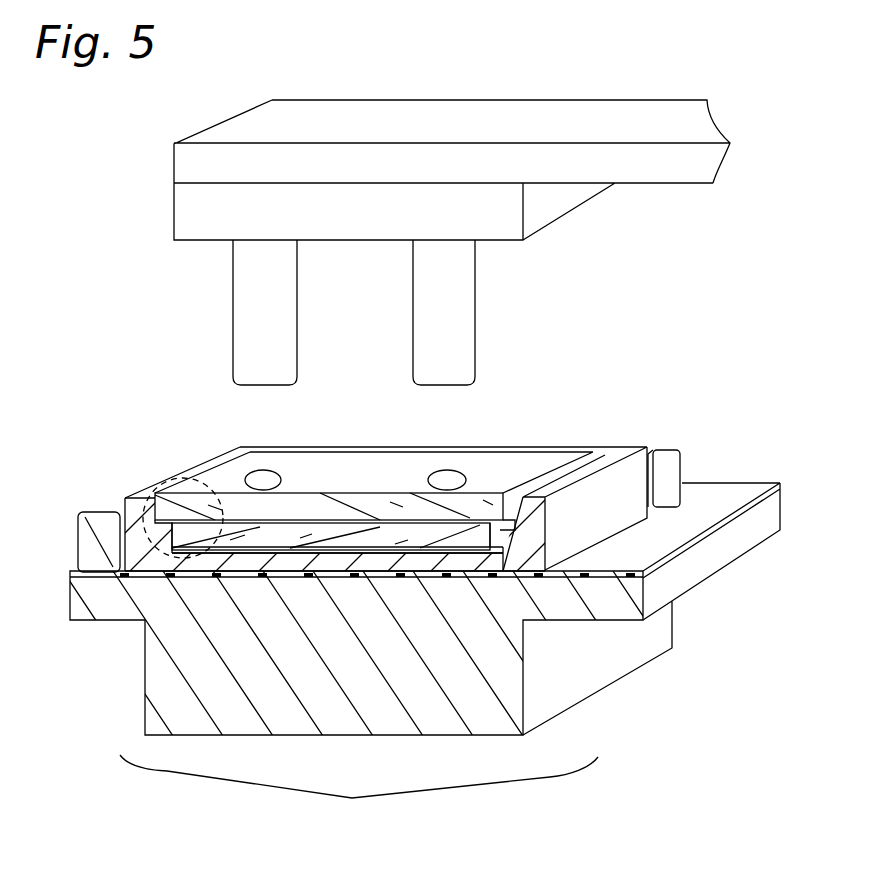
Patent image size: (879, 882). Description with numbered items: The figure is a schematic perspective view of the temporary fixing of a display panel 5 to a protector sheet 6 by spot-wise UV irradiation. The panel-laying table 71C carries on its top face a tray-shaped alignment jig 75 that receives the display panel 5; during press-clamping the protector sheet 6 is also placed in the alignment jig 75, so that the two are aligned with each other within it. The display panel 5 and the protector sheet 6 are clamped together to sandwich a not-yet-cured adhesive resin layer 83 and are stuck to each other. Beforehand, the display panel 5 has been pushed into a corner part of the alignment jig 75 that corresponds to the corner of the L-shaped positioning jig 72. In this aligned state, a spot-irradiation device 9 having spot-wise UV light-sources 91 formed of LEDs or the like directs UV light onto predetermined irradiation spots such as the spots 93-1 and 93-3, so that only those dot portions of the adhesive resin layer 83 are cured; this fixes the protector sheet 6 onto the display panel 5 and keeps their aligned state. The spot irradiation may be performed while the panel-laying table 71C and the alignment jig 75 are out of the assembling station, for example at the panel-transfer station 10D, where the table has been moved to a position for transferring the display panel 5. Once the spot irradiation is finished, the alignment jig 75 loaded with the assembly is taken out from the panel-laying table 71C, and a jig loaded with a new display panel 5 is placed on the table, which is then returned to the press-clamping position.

The spot-irradiation device 9 is at (247, 127).
The spot-wise UV light-sources 91 is at (275, 302).
The protector sheet 6 is at (537, 462).
The irradiation spot 93-1 is at (268, 470).
The irradiation spot 93-3 is at (448, 472).
The adhesive resin layer 83 is at (373, 520).
The display panel 5 is at (276, 542).
The alignment jig 75 is at (133, 517).
The L-shaped positioning jig 72 is at (90, 513).
The panel-laying table 71C is at (493, 597).
The panel-transfer station 10D is at (359, 800).